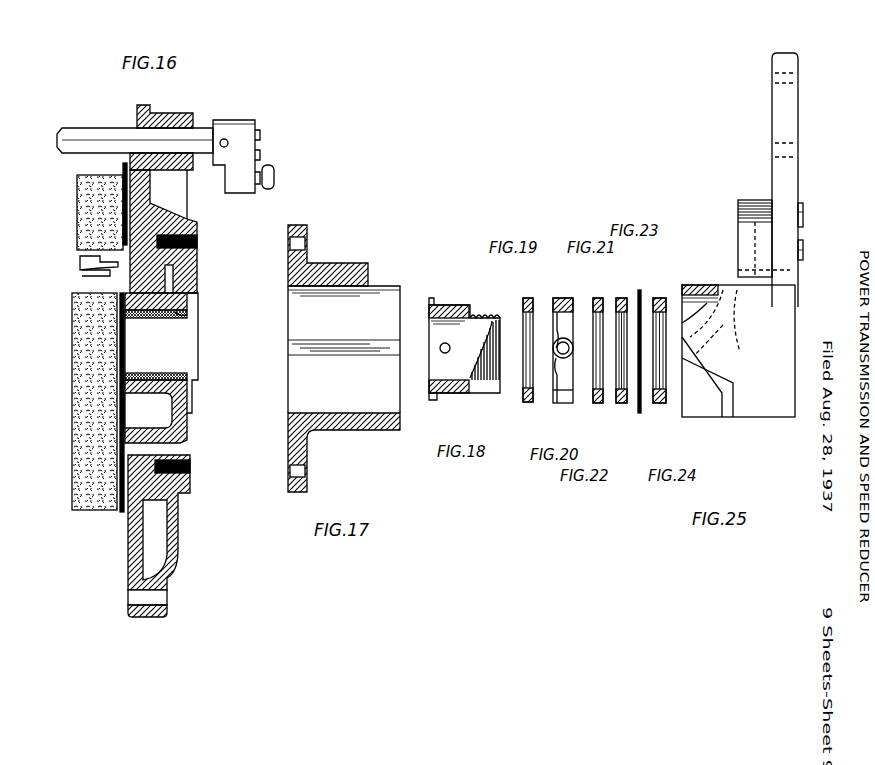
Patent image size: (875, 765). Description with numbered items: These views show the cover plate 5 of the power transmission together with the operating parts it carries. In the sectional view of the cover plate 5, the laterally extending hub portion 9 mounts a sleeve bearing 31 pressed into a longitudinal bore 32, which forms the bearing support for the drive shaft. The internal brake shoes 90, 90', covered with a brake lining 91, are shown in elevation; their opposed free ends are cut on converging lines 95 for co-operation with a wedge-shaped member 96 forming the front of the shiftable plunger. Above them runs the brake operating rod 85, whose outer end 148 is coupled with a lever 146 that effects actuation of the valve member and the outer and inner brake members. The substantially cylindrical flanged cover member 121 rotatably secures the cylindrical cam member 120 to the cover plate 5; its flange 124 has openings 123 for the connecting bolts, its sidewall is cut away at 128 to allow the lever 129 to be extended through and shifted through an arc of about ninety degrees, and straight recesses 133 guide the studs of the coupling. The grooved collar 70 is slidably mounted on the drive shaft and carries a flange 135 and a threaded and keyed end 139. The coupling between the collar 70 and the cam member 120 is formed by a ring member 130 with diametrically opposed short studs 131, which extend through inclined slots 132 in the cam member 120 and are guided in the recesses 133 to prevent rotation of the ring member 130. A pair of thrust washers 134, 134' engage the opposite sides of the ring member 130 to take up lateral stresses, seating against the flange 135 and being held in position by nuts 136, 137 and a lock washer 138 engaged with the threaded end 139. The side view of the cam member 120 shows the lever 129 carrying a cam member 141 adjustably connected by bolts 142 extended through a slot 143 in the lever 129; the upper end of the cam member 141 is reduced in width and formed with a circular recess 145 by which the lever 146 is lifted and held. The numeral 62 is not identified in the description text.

In FIG. 16, the rod 85 is at (93, 131).
In FIG. 16, the outer end of rod 148 is at (172, 133).
In FIG. 16, the lever 146 is at (243, 141).
In FIG. 16, the hub portion 9 is at (197, 226).
In FIG. 16, the brake shoe 90' is at (106, 200).
In FIG. 16, the brake shoe 90 is at (105, 414).
In FIG. 16, the brake lining 91 is at (78, 210).
In FIG. 16, the converging lines 95 is at (82, 261).
In FIG. 16, the wedge-shaped member 96 is at (83, 272).
In FIG. 16, the sleeve bearing 31 is at (166, 322).
In FIG. 16, the longitudinal bore 32 is at (183, 316).
In FIG. 16, the cover plate 5 is at (185, 489).
In FIG. 16, the casing 62 is at (2, 557).
In FIG. 17, the cover member 121 is at (340, 262).
In FIG. 17, the cut-away 128 is at (383, 288).
In FIG. 17, the straight recesses 133 is at (343, 357).
In FIG. 17, the flange 124 is at (309, 457).
In FIG. 17, the openings 123 is at (292, 470).
In FIG. 18, the grooved collar 70 is at (457, 393).
In FIG. 18, the flange 135 is at (432, 300).
In FIG. 18, the threaded and keyed end 139 is at (480, 307).
In FIG. 19, the thrust washer 134 is at (516, 363).
In FIG. 20, the ring member 130 is at (555, 312).
In FIG. 20, the studs 131 is at (562, 403).
In FIG. 21, the thrust washer 134' is at (591, 363).
In FIG. 22, the nut 136 is at (620, 299).
In FIG. 23, the lock washer 138 is at (639, 413).
In FIG. 24, the nut 137 is at (659, 300).
In FIG. 25, the lever 129 is at (775, 130).
In FIG. 25, the bolts 142 is at (797, 228).
In FIG. 25, the cam member 141 is at (738, 240).
In FIG. 25, the circular recess 145 is at (738, 204).
In FIG. 25, the slot 143 is at (737, 270).
In FIG. 25, the inclined slots 132 is at (712, 377).
In FIG. 25, the cam member 120 is at (760, 417).